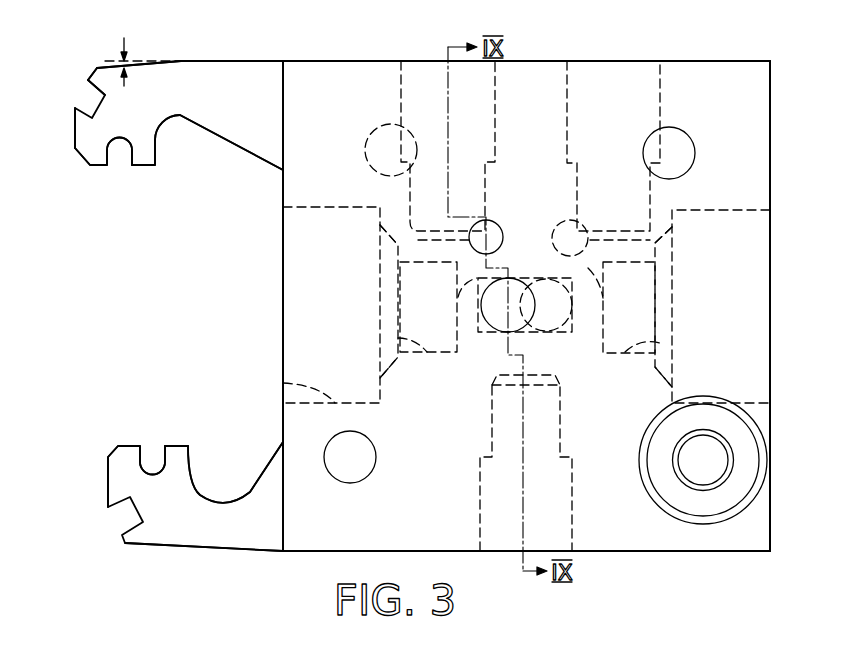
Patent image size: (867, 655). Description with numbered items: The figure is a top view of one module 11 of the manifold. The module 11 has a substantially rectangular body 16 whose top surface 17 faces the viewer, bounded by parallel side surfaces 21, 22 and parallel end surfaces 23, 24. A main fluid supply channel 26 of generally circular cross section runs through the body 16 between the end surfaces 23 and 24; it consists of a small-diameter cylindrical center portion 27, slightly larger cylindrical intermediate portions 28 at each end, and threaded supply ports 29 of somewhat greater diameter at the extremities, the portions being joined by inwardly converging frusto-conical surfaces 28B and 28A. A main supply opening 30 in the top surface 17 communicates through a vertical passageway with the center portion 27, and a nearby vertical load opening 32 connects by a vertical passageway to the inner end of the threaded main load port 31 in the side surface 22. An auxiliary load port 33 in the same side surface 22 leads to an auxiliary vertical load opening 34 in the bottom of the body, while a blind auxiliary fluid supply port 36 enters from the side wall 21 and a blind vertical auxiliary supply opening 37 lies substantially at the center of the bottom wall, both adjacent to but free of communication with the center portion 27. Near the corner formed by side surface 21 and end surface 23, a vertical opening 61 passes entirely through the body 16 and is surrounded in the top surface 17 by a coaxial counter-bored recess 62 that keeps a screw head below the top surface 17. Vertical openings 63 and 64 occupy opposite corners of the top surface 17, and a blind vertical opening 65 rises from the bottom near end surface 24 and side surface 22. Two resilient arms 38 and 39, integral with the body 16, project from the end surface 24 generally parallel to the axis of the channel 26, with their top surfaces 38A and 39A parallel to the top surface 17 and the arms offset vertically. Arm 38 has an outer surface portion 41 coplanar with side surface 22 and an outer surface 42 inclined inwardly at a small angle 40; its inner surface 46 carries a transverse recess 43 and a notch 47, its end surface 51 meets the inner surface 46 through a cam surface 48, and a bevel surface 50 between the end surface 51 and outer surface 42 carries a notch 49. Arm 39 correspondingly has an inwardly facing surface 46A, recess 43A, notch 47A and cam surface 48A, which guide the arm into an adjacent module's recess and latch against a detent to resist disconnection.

The module 11 is at (722, 48).
The body 16 is at (757, 126).
The top surface 17 is at (378, 520).
The side surface 21 is at (713, 551).
The side surface 22 is at (368, 61).
The end surface 23 is at (770, 527).
The end surface 24 is at (283, 185).
The main fluid supply channel 26 is at (728, 308).
The center portion 27 is at (587, 330).
The intermediate portion 28 is at (380, 338).
The frusto-conical surface 28A is at (392, 243).
The frusto-conical surface 28B is at (478, 272).
The threaded supply port 29 is at (283, 392).
The main supply opening 30 is at (492, 320).
The main load port 31 is at (405, 80).
The vertical load opening 32 is at (496, 230).
The auxiliary load port 33 is at (570, 84).
The auxiliary vertical load opening 34 is at (553, 222).
The auxiliary fluid supply port 36 is at (480, 510).
The vertical auxiliary supply opening 37 is at (545, 280).
The resilient arm 38 is at (181, 77).
The top surface 38A is at (179, 115).
The resilient arm 39 is at (240, 545).
The top surface 39A is at (195, 496).
The angle 40 is at (143, 46).
The outer surface portion 41 is at (267, 61).
The outer surface 42 is at (103, 68).
The recess 43 is at (193, 117).
The recess 43A is at (208, 503).
The inner surface 46 is at (143, 168).
The inwardly facing surface 46A is at (132, 447).
The notch 47 is at (118, 148).
The notch 47A is at (153, 447).
The cam surface 48 is at (83, 163).
The cam surface 48A is at (113, 447).
The notch 49 is at (95, 103).
The bevel surface 50 is at (95, 71).
The end surface 51 is at (72, 126).
The vertical opening 61 is at (718, 445).
The counter-bored recess 62 is at (752, 478).
The vertical opening 63 is at (688, 140).
The vertical opening 64 is at (372, 473).
The vertical opening 65 is at (375, 130).